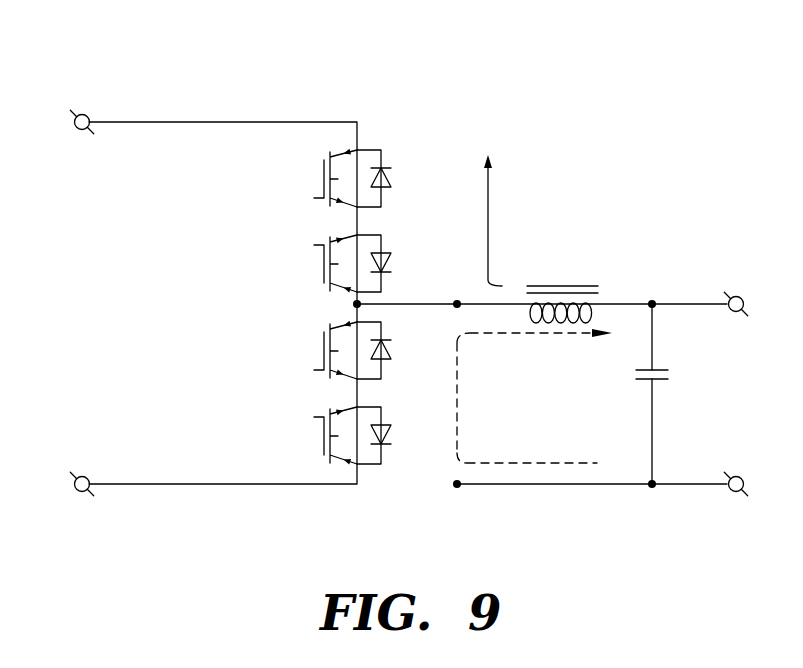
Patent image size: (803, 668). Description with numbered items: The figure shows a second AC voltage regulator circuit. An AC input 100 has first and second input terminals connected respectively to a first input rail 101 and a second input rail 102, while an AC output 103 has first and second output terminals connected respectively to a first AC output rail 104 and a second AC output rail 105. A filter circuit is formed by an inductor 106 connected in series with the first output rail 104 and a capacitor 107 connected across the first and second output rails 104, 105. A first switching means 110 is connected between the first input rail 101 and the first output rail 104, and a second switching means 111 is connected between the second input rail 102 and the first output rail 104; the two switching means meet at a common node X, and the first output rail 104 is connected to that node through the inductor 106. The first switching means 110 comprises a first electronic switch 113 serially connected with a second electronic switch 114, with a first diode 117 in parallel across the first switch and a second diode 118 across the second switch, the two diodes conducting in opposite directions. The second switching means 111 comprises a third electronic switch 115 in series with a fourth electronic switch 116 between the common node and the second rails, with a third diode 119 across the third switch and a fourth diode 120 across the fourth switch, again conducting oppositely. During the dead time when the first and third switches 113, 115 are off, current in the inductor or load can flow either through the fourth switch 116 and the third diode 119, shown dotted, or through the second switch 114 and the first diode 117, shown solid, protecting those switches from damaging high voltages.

The AC input 100 is at (133, 314).
The first input rail 101 is at (137, 123).
The second input rail 102 is at (137, 484).
The AC output 103 is at (748, 410).
The first AC output rail 104 is at (680, 303).
The second AC output rail 105 is at (680, 485).
The inductor 106 is at (562, 286).
The capacitor 107 is at (626, 373).
The first switching means 110 is at (287, 229).
The second switching means 111 is at (287, 401).
The first electronic switch 113 is at (320, 178).
The second electronic switch 114 is at (320, 264).
The third electronic switch 115 is at (320, 350).
The fourth electronic switch 116 is at (320, 436).
The first diode 117 is at (392, 178).
The second diode 118 is at (392, 263).
The third diode 119 is at (392, 350).
The fourth diode 120 is at (392, 435).